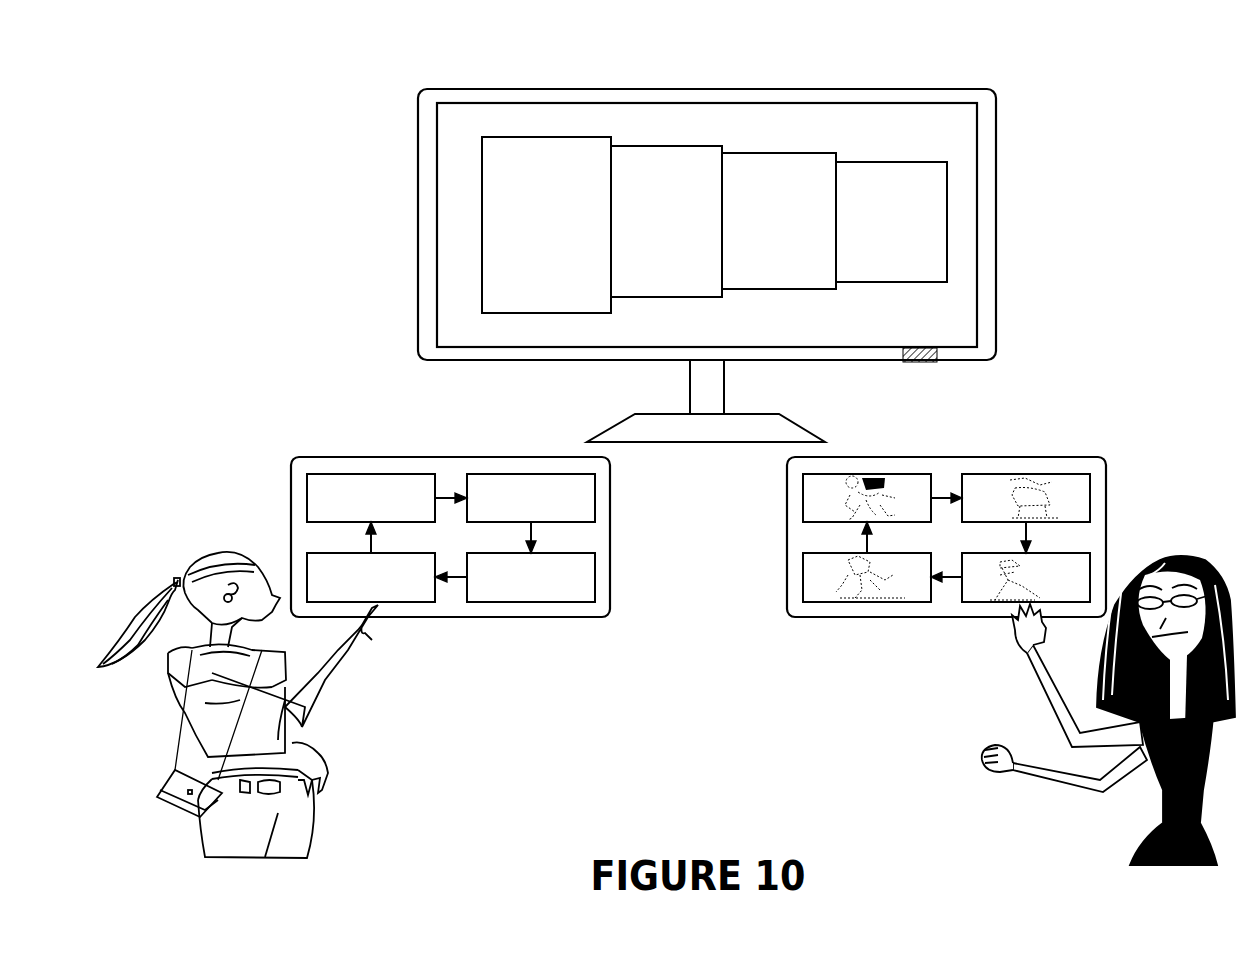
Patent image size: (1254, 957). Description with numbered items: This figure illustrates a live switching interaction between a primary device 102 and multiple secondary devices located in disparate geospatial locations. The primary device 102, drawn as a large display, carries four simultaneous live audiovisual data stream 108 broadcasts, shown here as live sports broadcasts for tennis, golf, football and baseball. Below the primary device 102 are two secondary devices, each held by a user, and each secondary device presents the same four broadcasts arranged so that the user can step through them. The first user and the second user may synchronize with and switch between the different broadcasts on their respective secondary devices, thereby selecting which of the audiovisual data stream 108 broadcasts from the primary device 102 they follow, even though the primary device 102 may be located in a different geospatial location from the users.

The primary device 102 is at (965, 129).
The audiovisual data stream 108 is at (875, 168).